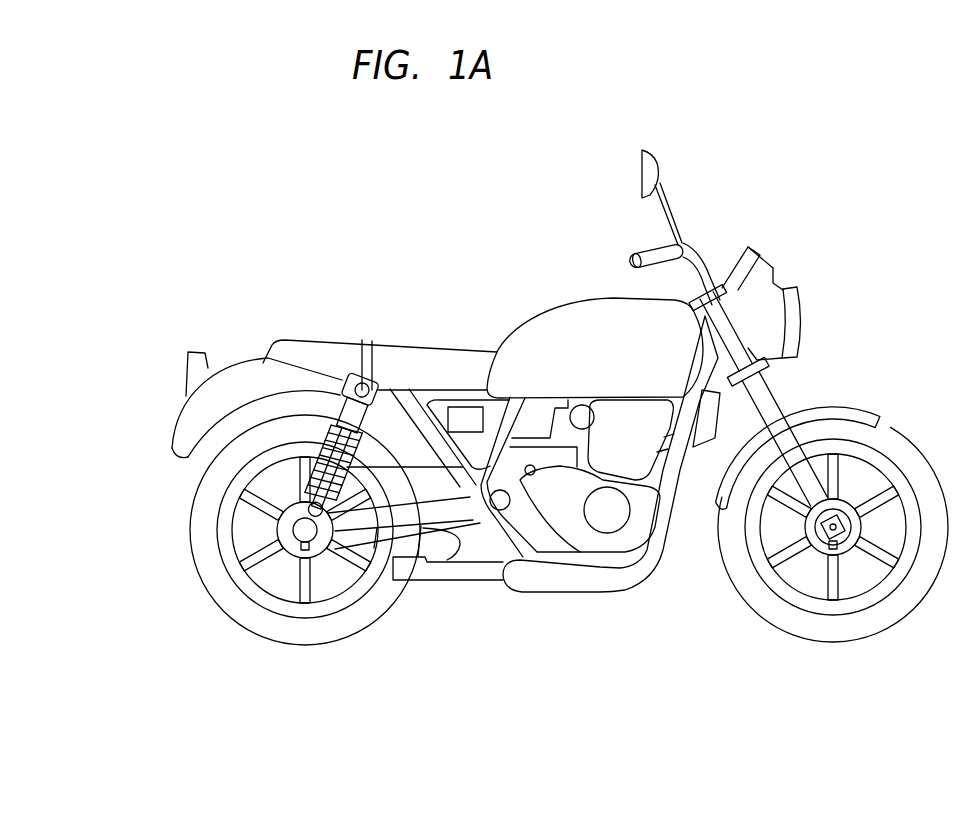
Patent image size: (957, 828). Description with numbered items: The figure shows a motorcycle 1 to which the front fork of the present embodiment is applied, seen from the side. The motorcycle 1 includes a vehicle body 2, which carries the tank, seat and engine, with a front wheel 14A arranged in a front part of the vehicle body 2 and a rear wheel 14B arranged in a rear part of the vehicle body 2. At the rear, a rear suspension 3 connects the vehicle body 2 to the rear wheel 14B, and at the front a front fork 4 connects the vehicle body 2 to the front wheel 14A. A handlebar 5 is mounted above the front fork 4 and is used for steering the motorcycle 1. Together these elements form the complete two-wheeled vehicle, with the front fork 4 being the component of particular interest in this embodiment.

The motorcycle 1 is at (797, 177).
The vehicle body 2 is at (487, 340).
The rear suspension 3 is at (340, 378).
The front fork 4 is at (790, 383).
The handlebar 5 is at (643, 247).
The front wheel 14A is at (833, 623).
The rear wheel 14B is at (302, 623).